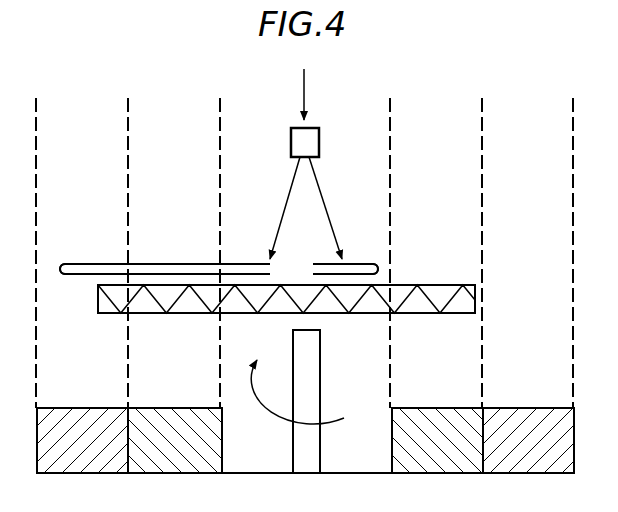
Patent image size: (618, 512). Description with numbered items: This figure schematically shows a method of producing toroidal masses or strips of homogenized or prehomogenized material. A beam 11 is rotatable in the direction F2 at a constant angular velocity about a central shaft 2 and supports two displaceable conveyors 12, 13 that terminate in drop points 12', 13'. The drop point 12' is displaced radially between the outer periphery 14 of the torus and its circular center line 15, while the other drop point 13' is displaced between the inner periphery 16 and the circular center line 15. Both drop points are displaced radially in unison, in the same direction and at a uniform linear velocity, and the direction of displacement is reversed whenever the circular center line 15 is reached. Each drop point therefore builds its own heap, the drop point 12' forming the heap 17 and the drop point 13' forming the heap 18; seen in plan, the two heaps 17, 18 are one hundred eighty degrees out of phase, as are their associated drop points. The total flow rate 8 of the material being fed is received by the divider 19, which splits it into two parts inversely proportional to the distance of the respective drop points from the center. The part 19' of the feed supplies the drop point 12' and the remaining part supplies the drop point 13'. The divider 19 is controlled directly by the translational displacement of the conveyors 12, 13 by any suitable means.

The shaft 2 is at (318, 378).
The total flow rate 8 is at (313, 94).
The beam 11 is at (182, 314).
The displaceable conveyor 12 is at (165, 254).
The drop point 12' is at (61, 254).
The displaceable conveyor 13 is at (348, 253).
The drop point 13' is at (403, 253).
The outer periphery of the torus 14 is at (305, 238).
The circular center line 15 is at (306, 238).
The inner periphery 16 is at (305, 238).
The heap 17 is at (84, 468).
The heap 18 is at (172, 466).
The divider 19 is at (323, 142).
The part of the feed 19' is at (273, 208).
The direction of rotation F2 is at (296, 392).